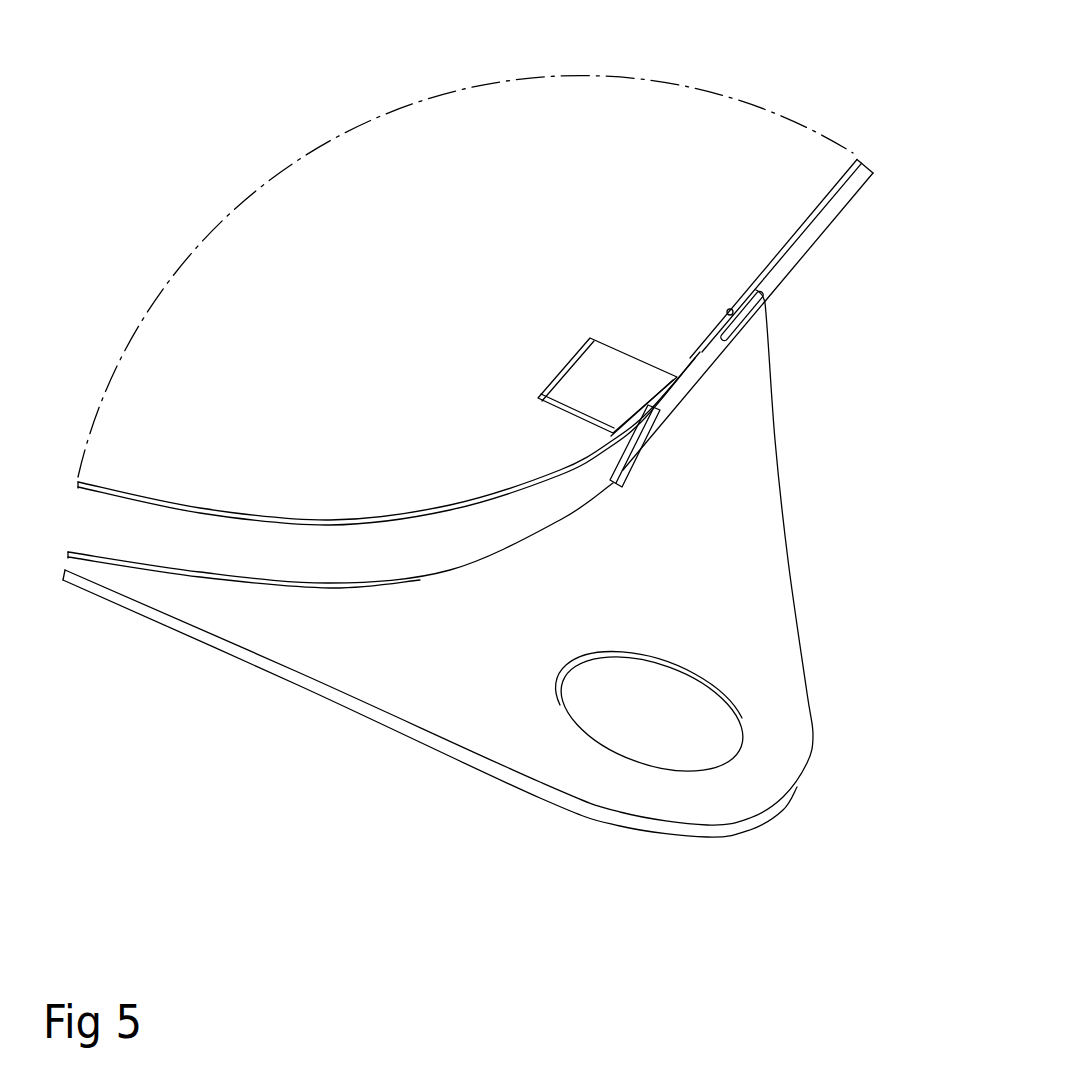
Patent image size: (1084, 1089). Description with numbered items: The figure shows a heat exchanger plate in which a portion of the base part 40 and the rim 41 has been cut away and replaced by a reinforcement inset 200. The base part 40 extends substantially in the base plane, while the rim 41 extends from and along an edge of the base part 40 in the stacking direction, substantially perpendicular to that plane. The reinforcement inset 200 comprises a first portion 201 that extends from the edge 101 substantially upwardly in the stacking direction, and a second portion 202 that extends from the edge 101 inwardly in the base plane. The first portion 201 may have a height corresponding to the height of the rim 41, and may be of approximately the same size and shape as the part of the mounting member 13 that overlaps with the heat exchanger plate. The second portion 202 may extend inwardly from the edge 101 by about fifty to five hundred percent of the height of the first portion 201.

The mounting member 13 is at (477, 707).
The base part 40 is at (720, 153).
The rim 41 is at (825, 224).
The edge 101 is at (620, 472).
The reinforcement inset 200 is at (690, 429).
The first portion 201 is at (725, 347).
The second portion 202 is at (603, 387).